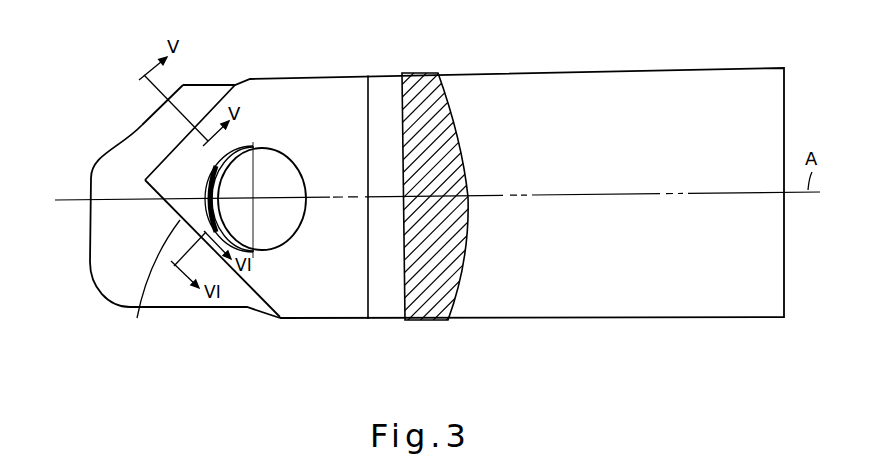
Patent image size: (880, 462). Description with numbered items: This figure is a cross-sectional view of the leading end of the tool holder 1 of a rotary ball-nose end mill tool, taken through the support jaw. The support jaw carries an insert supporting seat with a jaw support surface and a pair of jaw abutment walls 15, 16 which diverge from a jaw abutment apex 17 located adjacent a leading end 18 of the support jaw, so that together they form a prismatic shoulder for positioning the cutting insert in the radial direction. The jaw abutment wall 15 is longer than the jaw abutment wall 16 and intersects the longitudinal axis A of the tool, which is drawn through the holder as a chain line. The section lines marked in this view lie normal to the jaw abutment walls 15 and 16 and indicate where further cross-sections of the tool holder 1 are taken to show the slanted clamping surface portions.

The tool holder 1 is at (590, 300).
The jaw abutment wall 15 is at (153, 283).
The jaw abutment wall 16 is at (172, 148).
The jaw abutment apex 17 is at (145, 181).
The leading end of the support jaw 18 is at (93, 274).